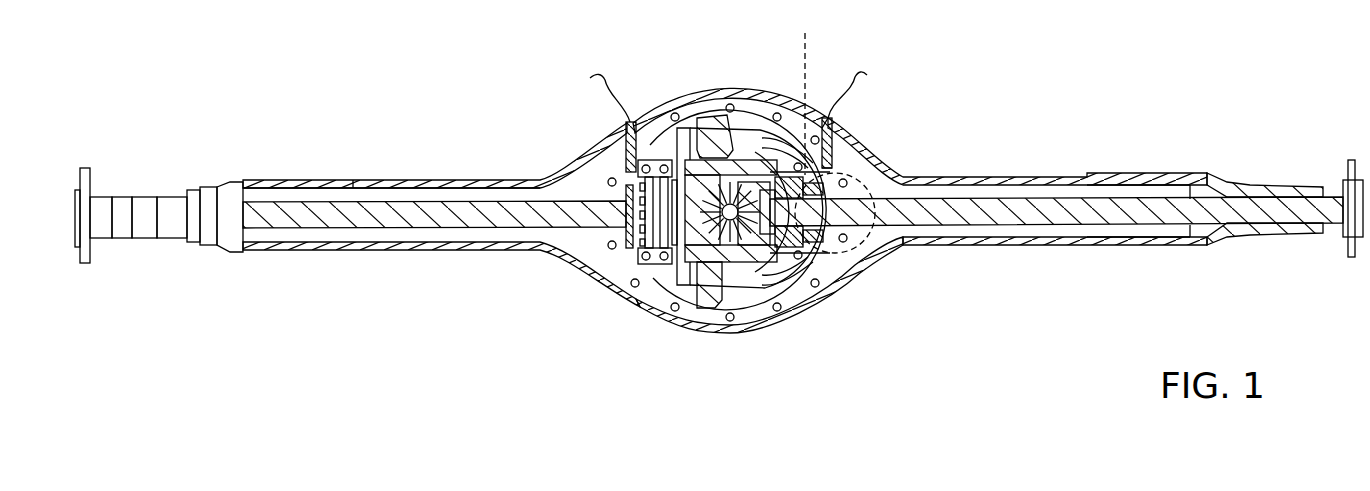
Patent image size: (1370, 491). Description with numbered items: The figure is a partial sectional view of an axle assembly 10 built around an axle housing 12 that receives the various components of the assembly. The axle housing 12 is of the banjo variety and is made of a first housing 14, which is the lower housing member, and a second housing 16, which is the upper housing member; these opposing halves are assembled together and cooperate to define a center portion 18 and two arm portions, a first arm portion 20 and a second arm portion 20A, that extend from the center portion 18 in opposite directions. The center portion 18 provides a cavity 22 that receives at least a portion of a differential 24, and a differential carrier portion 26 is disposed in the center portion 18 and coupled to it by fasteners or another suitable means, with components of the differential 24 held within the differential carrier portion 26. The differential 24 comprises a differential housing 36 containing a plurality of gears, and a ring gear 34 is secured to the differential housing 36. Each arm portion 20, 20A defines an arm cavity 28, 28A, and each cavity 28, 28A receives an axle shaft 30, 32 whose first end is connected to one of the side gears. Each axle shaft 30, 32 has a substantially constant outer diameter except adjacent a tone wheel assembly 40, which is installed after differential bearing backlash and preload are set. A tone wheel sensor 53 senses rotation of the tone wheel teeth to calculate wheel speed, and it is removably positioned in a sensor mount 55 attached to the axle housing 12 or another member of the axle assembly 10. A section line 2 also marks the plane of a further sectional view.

The section line 2- 2 is at (806, 91).
The axle assembly 10 is at (466, 92).
The axle housing 12 is at (964, 148).
The first housing 14 is at (313, 252).
The second housing 16 is at (285, 178).
The center portion 18 is at (719, 398).
The first arm portion 20 is at (1023, 273).
The second arm portion 20A is at (448, 292).
The cavity 22 is at (655, 143).
The differential 24 is at (746, 300).
The differential carrier portion 26 is at (757, 130).
The arm cavity 28 is at (1148, 193).
The arm cavity 28A is at (325, 193).
The axle shaft 30 is at (1252, 207).
The axle shaft 32 is at (278, 218).
The ring gear 34 is at (708, 123).
The differential housing 36 is at (692, 288).
The tone wheel assembly 40 is at (838, 268).
The tone wheel sensor 53 is at (832, 157).
The sensor mount 55 is at (832, 127).